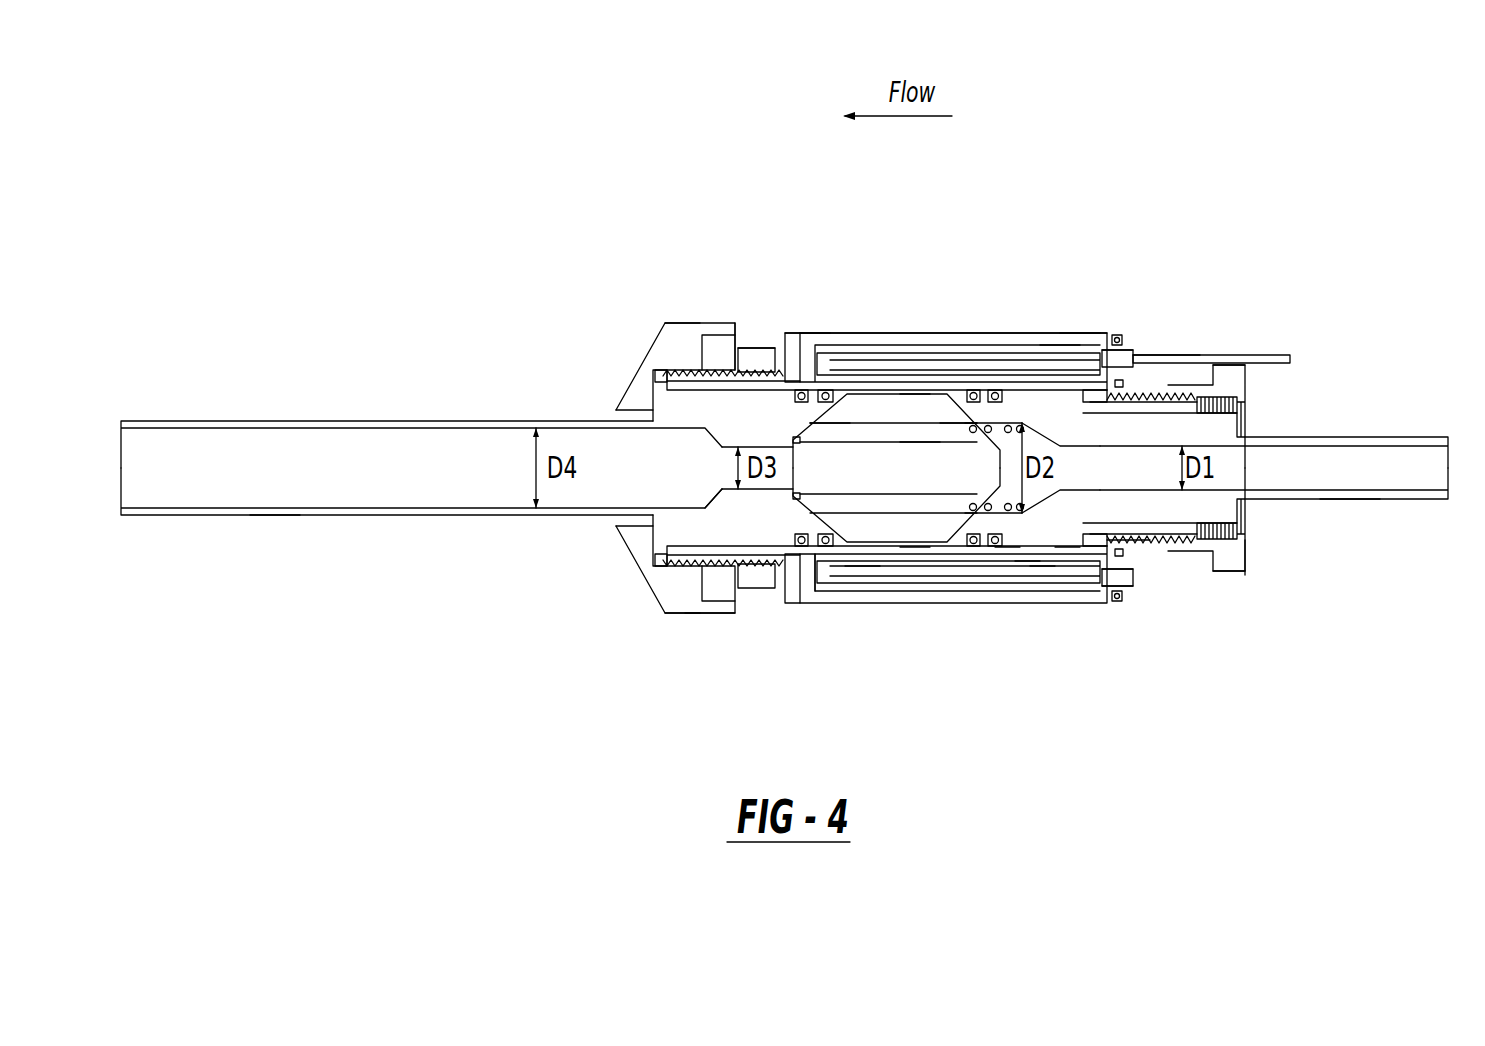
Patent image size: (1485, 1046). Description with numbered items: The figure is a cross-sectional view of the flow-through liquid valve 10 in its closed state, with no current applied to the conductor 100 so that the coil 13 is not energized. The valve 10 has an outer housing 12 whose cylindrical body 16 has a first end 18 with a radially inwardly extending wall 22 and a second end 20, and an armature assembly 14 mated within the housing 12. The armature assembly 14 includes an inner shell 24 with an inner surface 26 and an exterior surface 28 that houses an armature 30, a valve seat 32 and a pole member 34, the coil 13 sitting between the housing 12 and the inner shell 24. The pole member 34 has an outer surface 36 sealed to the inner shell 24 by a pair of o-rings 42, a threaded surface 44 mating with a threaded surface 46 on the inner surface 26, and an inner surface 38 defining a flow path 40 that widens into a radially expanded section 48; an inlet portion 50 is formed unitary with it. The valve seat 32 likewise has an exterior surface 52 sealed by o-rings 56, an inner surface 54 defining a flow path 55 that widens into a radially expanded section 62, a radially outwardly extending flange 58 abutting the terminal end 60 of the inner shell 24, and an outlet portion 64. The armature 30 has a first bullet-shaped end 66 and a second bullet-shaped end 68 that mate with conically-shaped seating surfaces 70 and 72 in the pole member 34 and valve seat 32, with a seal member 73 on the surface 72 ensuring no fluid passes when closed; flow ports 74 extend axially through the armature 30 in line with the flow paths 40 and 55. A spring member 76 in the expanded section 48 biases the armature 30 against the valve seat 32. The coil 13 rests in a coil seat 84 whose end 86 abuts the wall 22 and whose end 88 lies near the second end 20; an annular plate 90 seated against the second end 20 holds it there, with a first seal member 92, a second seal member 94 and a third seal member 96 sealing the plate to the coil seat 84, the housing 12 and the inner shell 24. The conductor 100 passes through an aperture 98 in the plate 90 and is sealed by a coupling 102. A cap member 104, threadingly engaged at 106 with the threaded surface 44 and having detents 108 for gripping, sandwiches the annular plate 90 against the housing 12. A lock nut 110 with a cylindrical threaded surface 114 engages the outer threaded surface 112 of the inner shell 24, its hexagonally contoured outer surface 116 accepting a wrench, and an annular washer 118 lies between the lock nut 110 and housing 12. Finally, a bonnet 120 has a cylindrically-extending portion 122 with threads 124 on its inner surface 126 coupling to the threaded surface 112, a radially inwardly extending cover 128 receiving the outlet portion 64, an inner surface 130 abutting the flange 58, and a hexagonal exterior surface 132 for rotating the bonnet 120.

The flow-through liquid valve 10 is at (1229, 201).
The housing 12 is at (1000, 333).
The coil 13 is at (863, 567).
The armature assembly 14 is at (1042, 561).
The cylindrical body 16 is at (1065, 333).
The first end 18 is at (905, 335).
The second end 20 is at (1112, 348).
The radially inwardly extending wall 22 is at (803, 580).
The inner shell 24 is at (1007, 550).
The inner surface 26 is at (1043, 346).
The exterior surface 28 is at (913, 550).
The armature 30 is at (910, 489).
The valve seat 32 is at (757, 435).
The pole member 34 is at (1150, 433).
The outer surface 36 is at (1067, 548).
The inner surface 38 is at (1090, 455).
The flow path 40 is at (1289, 484).
The o-rings 42 is at (990, 547).
The threaded surface 44 is at (1215, 575).
The threaded surface 46 is at (1180, 372).
The radially expanded section 48 is at (985, 508).
The inlet portion 50 is at (1330, 500).
The exterior surface 52 is at (716, 392).
The inner surface 54 is at (640, 518).
The flow path 55 is at (447, 489).
The o-rings 56 is at (813, 540).
The radially outwardly extending flange 58 is at (650, 338).
The terminal end 60 is at (680, 562).
The radially expanded section 62 is at (694, 505).
The outlet portion 64 is at (273, 515).
The first bullet-shaped end 66 is at (983, 437).
The second bullet-shaped end 68 is at (800, 448).
The conically-shaped seating surface 70 is at (962, 418).
The conically-shaped seating surface 72 is at (812, 422).
The seal member 73 is at (750, 575).
The flow ports 74 is at (946, 452).
The spring member 76 is at (932, 396).
The coil seat 84 is at (1025, 560).
The end 86 is at (823, 578).
The end 88 is at (1098, 586).
The annular plate 90 is at (1130, 588).
The first seal member 92 is at (1133, 358).
The second seal member 94 is at (1117, 335).
The third seal member 96 is at (1115, 552).
The aperture 98 is at (1125, 347).
The conductor 100 is at (1290, 360).
The coupling 102 is at (1100, 360).
The cap member 104 is at (1237, 387).
The threaded engagement 106 is at (1245, 560).
The detents 108 is at (1265, 355).
The lock nut 110 is at (758, 340).
The outer threaded surface 112 is at (780, 335).
The cylindrical threaded surface 114 is at (717, 337).
The hexagonally contoured outer surface 116 is at (762, 592).
The annular washer 118 is at (795, 333).
The bonnet 120 is at (667, 615).
The cylindrically-extending portion 122 is at (680, 322).
The threads 124 is at (697, 337).
The inner surface 126 is at (742, 346).
The radially inwardly extending cover 128 is at (652, 375).
The inner surface 130 is at (652, 400).
The exterior surface 132 is at (685, 615).